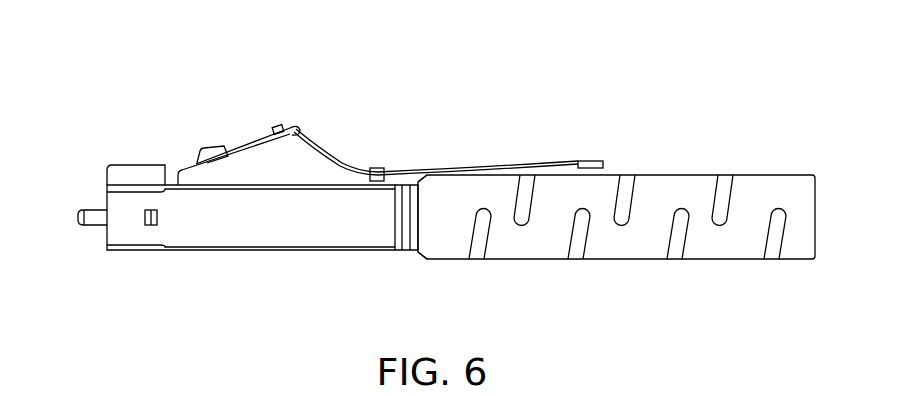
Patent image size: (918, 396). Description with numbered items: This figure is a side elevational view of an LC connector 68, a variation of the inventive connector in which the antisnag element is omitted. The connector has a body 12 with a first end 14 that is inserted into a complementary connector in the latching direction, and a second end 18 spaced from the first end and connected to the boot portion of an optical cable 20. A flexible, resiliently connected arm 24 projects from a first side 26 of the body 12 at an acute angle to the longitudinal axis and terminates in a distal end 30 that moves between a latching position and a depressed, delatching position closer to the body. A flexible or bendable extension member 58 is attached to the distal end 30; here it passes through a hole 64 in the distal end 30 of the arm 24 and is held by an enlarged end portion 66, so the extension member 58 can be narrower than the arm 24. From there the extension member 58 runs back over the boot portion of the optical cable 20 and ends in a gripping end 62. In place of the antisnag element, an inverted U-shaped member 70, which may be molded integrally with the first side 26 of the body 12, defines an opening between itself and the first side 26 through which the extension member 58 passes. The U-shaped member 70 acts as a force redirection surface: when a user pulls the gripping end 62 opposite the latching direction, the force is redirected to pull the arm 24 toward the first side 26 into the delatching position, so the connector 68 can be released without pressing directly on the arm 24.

The body 12 is at (118, 203).
The first end 14 is at (104, 235).
The second end 18 is at (402, 250).
The optical cable 20 is at (621, 251).
The arm 24 is at (243, 138).
The first side 26 is at (117, 183).
The distal end 30 is at (296, 123).
The extension member 58 is at (499, 166).
The gripping end 62 is at (595, 160).
The hole 64 is at (276, 144).
The enlarged end portion 66 is at (275, 127).
The LC connector 68 is at (352, 131).
The inverted U-shaped member 70 is at (378, 168).